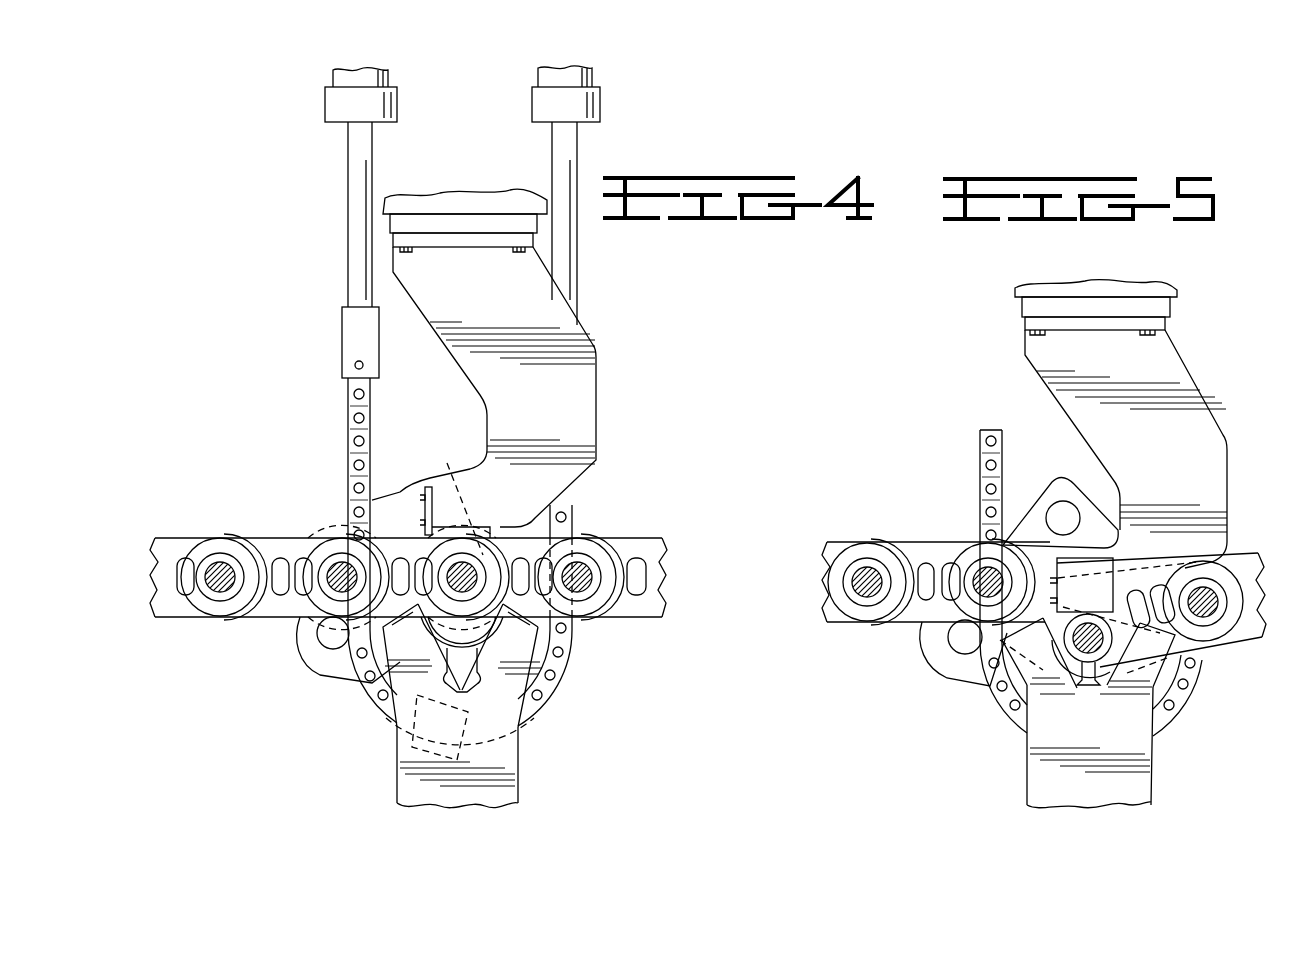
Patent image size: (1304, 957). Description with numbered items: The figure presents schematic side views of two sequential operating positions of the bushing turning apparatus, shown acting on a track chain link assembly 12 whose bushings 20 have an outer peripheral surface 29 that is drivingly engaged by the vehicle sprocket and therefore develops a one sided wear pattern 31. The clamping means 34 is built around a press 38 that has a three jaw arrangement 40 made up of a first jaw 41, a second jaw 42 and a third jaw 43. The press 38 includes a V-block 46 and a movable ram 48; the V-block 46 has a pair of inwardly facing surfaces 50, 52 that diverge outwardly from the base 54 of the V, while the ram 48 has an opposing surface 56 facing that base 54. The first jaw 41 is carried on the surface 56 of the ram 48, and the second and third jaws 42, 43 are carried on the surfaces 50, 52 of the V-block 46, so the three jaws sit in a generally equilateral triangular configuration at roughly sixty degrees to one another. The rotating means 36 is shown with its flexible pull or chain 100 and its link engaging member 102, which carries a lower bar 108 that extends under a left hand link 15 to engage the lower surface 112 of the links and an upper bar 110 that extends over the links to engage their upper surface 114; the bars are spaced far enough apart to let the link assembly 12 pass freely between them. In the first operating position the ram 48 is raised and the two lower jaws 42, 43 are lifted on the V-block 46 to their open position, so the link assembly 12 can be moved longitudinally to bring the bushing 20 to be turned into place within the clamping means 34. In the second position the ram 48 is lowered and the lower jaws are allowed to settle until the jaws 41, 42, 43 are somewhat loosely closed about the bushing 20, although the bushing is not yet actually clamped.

In FIG. 4, the track chain link assembly 12 is at (190, 530).
In FIG. 4, the left hand link 15 is at (265, 538).
In FIG. 4, the bushing 20 is at (492, 560).
In FIG. 5, the outer peripheral surface 29 is at (845, 580).
In FIG. 5, the one sided wear pattern 31 is at (963, 553).
In FIG. 4, the clamping means 34 is at (512, 499).
In FIG. 4, the rotating means 36 is at (340, 459).
In FIG. 4, the press 38 is at (607, 455).
In FIG. 4, the three jaw arrangement 40 is at (503, 644).
In FIG. 4, the first jaw 41 is at (467, 495).
In FIG. 4, the second jaw 42 is at (358, 657).
In FIG. 4, the third jaw 43 is at (512, 628).
In FIG. 4, the V-block 46 is at (520, 793).
In FIG. 5, the V-block 46 is at (1108, 746).
In FIG. 4, the movable ram 48 is at (545, 404).
In FIG. 5, the movable ram 48 is at (1178, 459).
In FIG. 4, the inwardly facing surface 50 is at (378, 703).
In FIG. 4, the inwardly facing surface 52 is at (520, 725).
In FIG. 4, the base 54 is at (417, 728).
In FIG. 4, the opposing surface 56 is at (505, 529).
In FIG. 4, the chain 100 is at (352, 430).
In FIG. 4, the link engaging member 102 is at (288, 633).
In FIG. 5, the bar 108 is at (950, 637).
In FIG. 5, the upper bar 110 is at (1063, 508).
In FIG. 4, the lower surface 112 is at (305, 676).
In FIG. 5, the lower surface 112 is at (983, 683).
In FIG. 4, the upper surface 114 is at (368, 540).